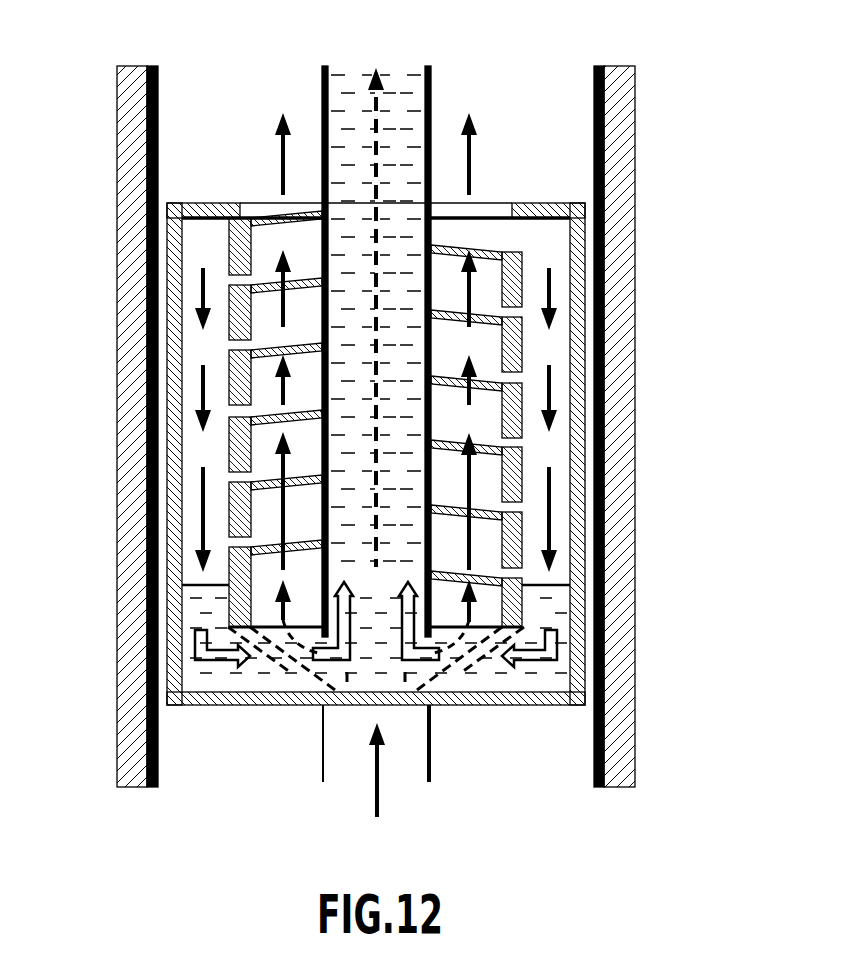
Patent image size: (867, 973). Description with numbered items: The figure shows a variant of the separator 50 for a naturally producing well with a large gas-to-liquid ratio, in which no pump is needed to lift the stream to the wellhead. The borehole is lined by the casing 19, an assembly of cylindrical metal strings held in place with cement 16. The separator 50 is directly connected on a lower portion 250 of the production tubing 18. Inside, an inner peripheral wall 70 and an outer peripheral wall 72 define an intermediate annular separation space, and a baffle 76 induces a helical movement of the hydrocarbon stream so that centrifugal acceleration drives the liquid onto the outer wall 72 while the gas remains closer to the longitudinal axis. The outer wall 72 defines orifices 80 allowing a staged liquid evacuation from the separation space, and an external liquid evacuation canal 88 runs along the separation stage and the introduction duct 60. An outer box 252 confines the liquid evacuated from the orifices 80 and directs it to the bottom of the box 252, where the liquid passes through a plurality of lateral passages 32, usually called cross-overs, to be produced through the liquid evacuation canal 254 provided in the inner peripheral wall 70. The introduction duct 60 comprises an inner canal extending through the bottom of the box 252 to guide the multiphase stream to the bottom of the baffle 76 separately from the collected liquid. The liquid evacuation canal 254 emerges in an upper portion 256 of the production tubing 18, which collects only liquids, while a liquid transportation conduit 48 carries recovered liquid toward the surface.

The cement 16 is at (130, 627).
The production tubing 18 is at (313, 761).
The casing 19 is at (170, 742).
The lateral passages 32 is at (270, 678).
The liquid transportation conduit 48 is at (322, 241).
The separator 50 is at (158, 541).
The introduction duct 60 is at (467, 663).
The inner peripheral wall 70 is at (433, 548).
The outer peripheral wall 72 is at (528, 340).
The baffle 76 is at (478, 443).
The orifice 80 is at (523, 505).
The external liquid evacuation canal 88 is at (548, 238).
The lower portion of the production tubing 250 is at (432, 750).
The outer box 252 is at (577, 477).
The liquid evacuation canal 254 is at (385, 318).
The upper portion of the production tubing 256 is at (432, 73).